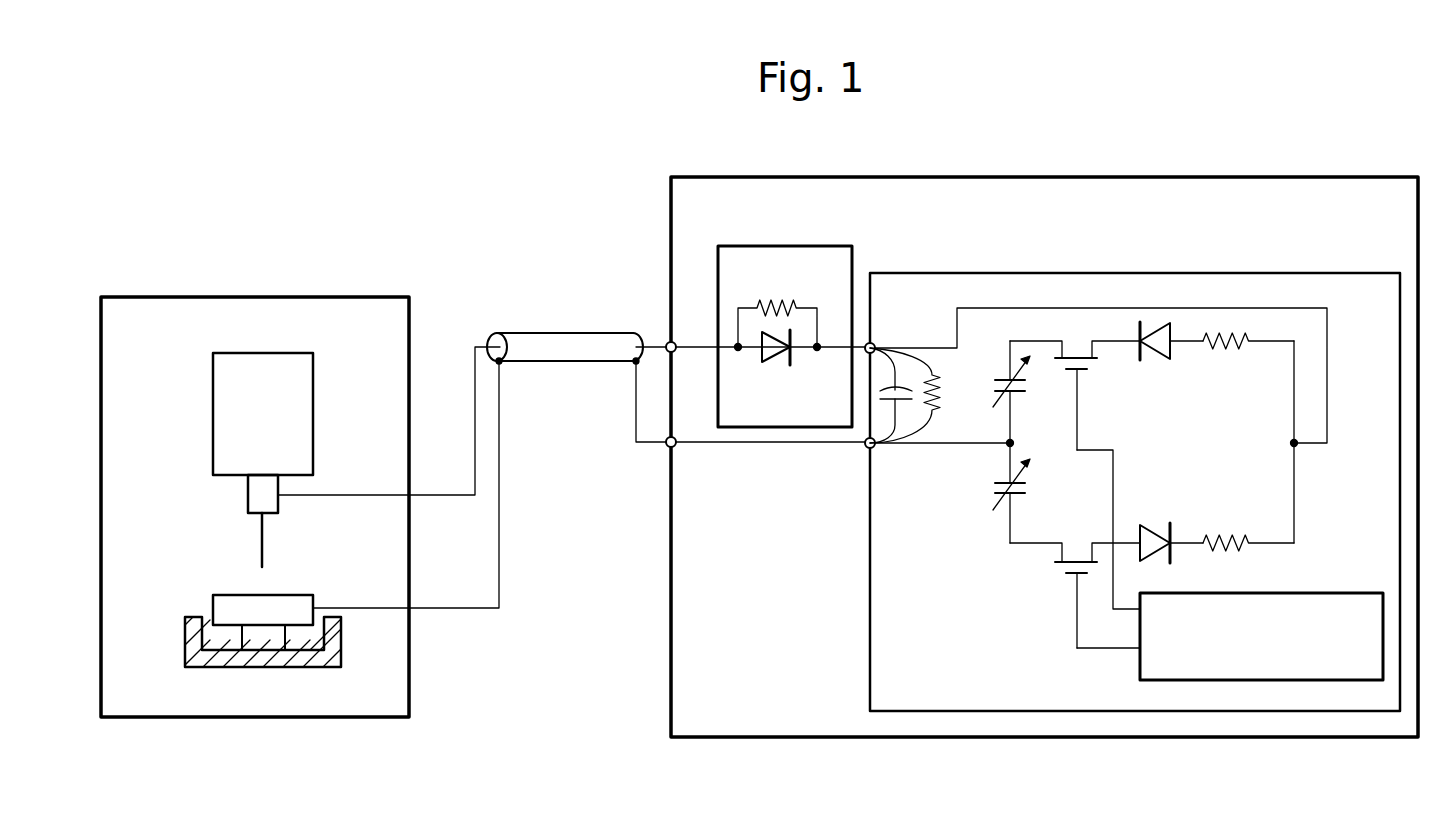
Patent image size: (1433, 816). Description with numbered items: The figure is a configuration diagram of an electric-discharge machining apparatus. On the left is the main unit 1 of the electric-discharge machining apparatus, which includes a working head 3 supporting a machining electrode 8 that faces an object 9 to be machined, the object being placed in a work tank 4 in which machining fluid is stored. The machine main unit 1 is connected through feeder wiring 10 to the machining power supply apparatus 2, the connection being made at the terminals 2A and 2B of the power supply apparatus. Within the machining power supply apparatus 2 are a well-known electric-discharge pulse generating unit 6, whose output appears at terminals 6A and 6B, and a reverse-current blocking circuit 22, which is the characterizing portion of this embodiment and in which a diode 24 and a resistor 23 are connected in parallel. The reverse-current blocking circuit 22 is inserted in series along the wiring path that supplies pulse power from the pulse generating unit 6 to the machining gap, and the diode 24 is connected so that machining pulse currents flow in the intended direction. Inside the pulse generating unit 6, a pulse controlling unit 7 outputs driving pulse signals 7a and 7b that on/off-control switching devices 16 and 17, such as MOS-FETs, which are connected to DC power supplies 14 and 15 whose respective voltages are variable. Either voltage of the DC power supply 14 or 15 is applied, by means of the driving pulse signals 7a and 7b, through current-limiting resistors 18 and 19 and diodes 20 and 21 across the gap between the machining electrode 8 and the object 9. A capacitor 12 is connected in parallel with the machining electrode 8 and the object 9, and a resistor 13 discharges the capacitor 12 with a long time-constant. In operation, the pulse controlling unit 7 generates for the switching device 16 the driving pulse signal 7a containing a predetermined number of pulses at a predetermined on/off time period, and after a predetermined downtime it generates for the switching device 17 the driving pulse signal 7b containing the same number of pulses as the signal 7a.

The electric-discharge machining apparatus main unit 1 is at (295, 297).
The machining power supply apparatus 2 is at (671, 605).
The power supply output terminal 2A is at (684, 333).
The power supply output terminal 2B is at (684, 457).
The working head 3 is at (213, 401).
The work tank 4 is at (185, 633).
The electric-discharge pulse generating unit 6 is at (870, 631).
The circuit terminal 6A is at (884, 334).
The circuit terminal 6B is at (883, 457).
The pulse controlling unit 7 is at (1323, 593).
The driving pulse signal 7a is at (1116, 452).
The driving pulse signal 7b is at (1074, 645).
The machining electrode 8 is at (265, 540).
The object to be machined 9 is at (235, 595).
The feeder wiring 10 is at (578, 338).
The capacitor 12 is at (893, 373).
The resistor 13 is at (940, 405).
The DC power supply 14 is at (1003, 375).
The DC power supply 15 is at (1001, 477).
The switching device 16 is at (1080, 377).
The switching device 17 is at (1070, 584).
The current-limiting resistor 18 is at (1233, 349).
The current-limiting resistor 19 is at (1218, 534).
The diode 20 is at (1155, 361).
The diode 21 is at (1151, 526).
The reverse-current blocking circuit 22 is at (812, 246).
The resistor 23 is at (775, 303).
The diode 24 is at (777, 365).